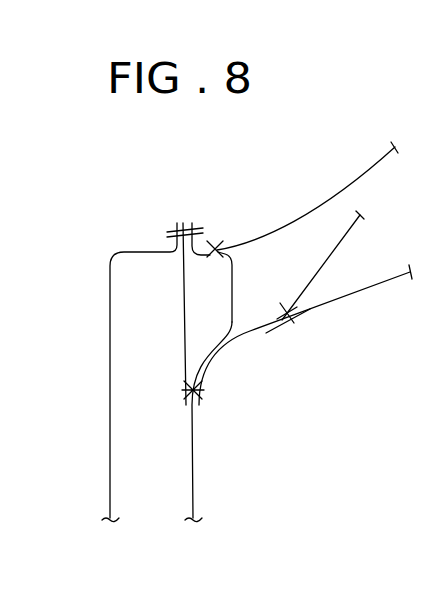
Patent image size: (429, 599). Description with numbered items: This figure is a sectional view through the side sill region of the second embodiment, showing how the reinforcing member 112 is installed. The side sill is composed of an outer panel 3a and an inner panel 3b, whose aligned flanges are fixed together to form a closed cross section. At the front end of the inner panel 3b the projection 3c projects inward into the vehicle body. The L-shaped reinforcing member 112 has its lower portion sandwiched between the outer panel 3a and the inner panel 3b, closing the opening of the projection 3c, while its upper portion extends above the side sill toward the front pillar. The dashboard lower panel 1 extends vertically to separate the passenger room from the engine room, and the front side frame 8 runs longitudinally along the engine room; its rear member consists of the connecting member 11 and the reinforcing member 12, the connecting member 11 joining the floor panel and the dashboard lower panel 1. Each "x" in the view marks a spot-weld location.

The dashboard lower panel 1 is at (372, 286).
The outer panel 3a is at (109, 442).
The inner panel 3b is at (193, 468).
The projection 3c is at (233, 307).
The front side frame 8 is at (336, 182).
The connecting member 11 is at (270, 235).
The reinforcing member 12 is at (322, 268).
The reinforcing member 112 is at (183, 336).